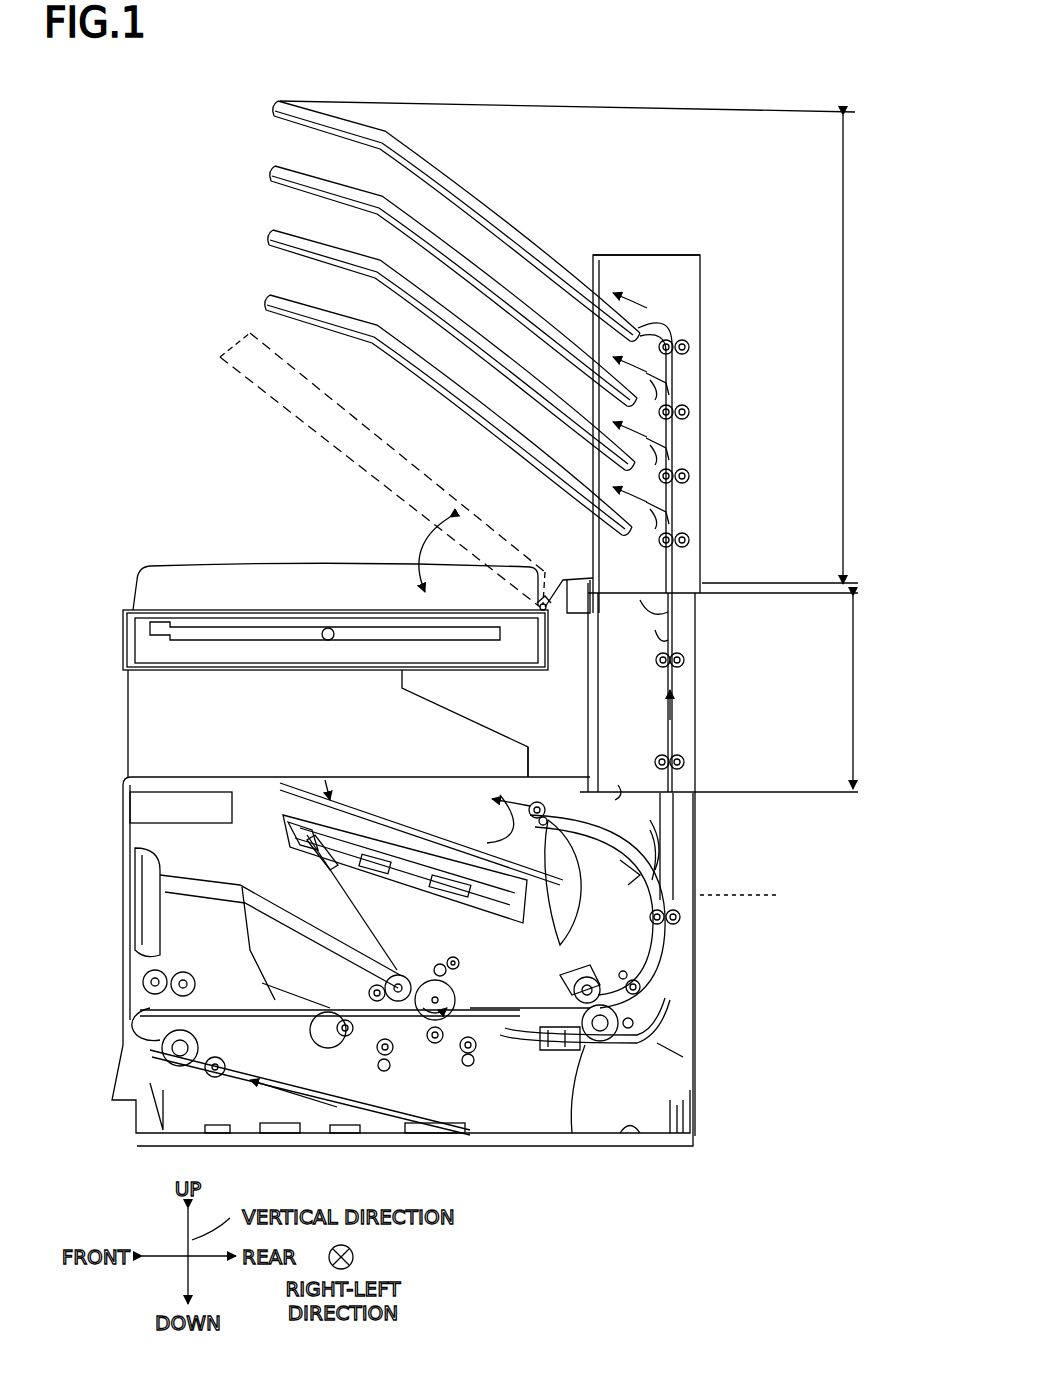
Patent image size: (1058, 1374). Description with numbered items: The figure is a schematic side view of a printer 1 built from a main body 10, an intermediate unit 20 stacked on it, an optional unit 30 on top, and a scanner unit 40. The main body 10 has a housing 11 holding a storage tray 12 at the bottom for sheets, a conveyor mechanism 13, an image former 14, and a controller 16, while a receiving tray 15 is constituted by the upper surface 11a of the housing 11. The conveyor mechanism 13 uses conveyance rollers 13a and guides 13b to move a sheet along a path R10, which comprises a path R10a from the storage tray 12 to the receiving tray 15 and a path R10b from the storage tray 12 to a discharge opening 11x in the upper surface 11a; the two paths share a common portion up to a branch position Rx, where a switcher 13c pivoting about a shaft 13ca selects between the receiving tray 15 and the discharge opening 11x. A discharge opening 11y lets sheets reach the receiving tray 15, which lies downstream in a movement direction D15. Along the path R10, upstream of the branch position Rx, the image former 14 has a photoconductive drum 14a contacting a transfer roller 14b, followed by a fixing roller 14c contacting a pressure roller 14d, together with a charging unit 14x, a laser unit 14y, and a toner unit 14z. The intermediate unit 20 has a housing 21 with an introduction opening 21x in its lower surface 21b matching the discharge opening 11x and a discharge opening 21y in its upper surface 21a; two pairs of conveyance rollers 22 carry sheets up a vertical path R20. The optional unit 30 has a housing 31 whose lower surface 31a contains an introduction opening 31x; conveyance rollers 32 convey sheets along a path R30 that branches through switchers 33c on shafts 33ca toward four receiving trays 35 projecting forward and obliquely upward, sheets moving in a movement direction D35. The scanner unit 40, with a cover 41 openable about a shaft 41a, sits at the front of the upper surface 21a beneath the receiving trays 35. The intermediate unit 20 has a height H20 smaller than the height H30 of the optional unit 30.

The printer 1 is at (132, 127).
The main body 10 is at (830, 916).
The housing 11 is at (700, 1006).
The upper surface 11a is at (700, 840).
The discharge opening 11x is at (700, 801).
The discharge opening 11y is at (520, 790).
The storage tray 12 is at (625, 1125).
The conveyor mechanism 13 is at (212, 955).
The conveyance rollers 13a is at (500, 810).
The guides 13b is at (215, 1036).
The switcher 13c is at (700, 863).
The shaft 13ca is at (560, 812).
The image former 14 is at (262, 832).
The photoconductive drum 14a is at (400, 975).
The transfer roller 14b is at (437, 1060).
The fixing roller 14c is at (560, 990).
The pressure roller 14d is at (598, 1042).
The charging unit 14x is at (440, 980).
The laser unit 14y is at (327, 790).
The toner unit 14z is at (275, 905).
The receiving tray 15 is at (370, 815).
The controller 16 is at (130, 806).
The intermediate unit 20 is at (785, 667).
The housing 21 is at (700, 691).
The upper surface 21a is at (680, 641).
The lower surface 21b is at (610, 790).
The introduction opening 21x is at (700, 790).
The discharge opening 21y is at (685, 602).
The conveyance rollers 22 is at (690, 661).
The optional unit 30 is at (785, 300).
The housing 31 is at (700, 272).
The lower surface 31a is at (588, 590).
The introduction opening 31x is at (720, 586).
The conveyance rollers 32 is at (690, 348).
The switchers 33c is at (672, 392).
The shaft 33ca is at (672, 380).
The receiving trays 35 is at (358, 188).
The scanner unit 40 is at (172, 530).
The cover 41 is at (330, 430).
The shaft 41a is at (543, 598).
The movement direction D15 is at (478, 781).
The movement direction D35 is at (625, 298).
The length H20 is at (877, 692).
The length H30 is at (586, 342).
The path R10 is at (480, 1050).
The path R10a is at (628, 850).
The path R10b is at (680, 836).
The path R20 is at (660, 691).
The path R30 is at (665, 545).
The branch position Rx is at (757, 889).